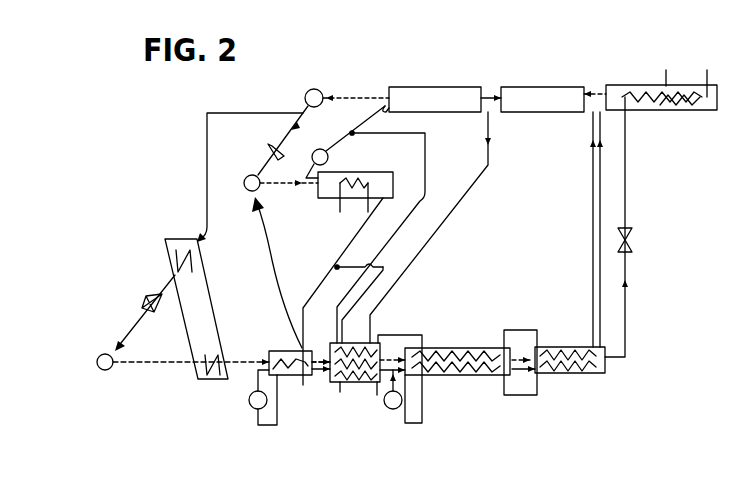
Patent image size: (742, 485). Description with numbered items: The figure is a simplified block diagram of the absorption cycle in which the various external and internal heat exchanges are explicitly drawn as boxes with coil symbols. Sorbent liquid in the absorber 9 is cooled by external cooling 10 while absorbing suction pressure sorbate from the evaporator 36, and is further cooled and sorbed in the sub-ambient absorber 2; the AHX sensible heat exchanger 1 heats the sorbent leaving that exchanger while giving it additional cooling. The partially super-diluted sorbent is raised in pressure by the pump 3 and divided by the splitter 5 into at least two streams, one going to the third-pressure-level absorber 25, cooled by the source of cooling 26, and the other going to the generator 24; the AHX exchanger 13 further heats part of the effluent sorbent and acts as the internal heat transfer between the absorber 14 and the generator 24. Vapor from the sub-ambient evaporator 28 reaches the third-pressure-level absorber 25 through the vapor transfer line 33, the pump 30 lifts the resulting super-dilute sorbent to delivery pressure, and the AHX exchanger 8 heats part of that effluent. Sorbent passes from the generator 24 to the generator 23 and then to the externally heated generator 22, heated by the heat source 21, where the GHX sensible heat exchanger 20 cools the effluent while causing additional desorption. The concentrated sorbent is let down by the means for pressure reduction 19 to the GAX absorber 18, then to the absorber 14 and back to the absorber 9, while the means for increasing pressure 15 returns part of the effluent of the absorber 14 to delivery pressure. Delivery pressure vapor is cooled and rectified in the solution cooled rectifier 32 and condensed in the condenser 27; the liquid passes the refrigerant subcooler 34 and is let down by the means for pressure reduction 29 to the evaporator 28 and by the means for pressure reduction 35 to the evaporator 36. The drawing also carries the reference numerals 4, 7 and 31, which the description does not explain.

The AHX sensible heat exchanger 1 is at (304, 376).
The sub-ambient absorber 2 is at (286, 377).
The pump 3 is at (250, 404).
The flow direction arrow 4 is at (266, 228).
The splitter 5 is at (330, 265).
The connecting line 7 is at (378, 276).
The AHX exchanger 8 is at (390, 360).
The absorber 9 is at (322, 354).
The external cooling 10 is at (341, 388).
The AHX exchanger 13 is at (357, 347).
The GAX absorber 14 is at (476, 384).
The means for increasing pressure 15 is at (388, 412).
The GAX absorber 18 is at (592, 376).
The means for pressure reduction 19 is at (634, 242).
The GHX sensible heat exchanger 20 is at (684, 110).
The heat source 21 is at (706, 70).
The externally heated generator 22 is at (646, 77).
The generator 23 is at (533, 80).
The generator 24 is at (441, 80).
The third pressure level absorber 25 is at (380, 176).
The source of cooling 26 is at (344, 200).
The condenser 27 is at (311, 90).
The sub-ambient evaporator 28 is at (243, 174).
The means for pressure reduction 29 is at (264, 143).
The pump 30 is at (318, 150).
The line 31 is at (354, 123).
The solution cooled rectifier 32 is at (386, 104).
The vapor transfer line 33 is at (282, 188).
The refrigerant subcooler 34 is at (180, 236).
The means for pressure reduction 35 is at (143, 296).
The evaporator 36 is at (102, 352).